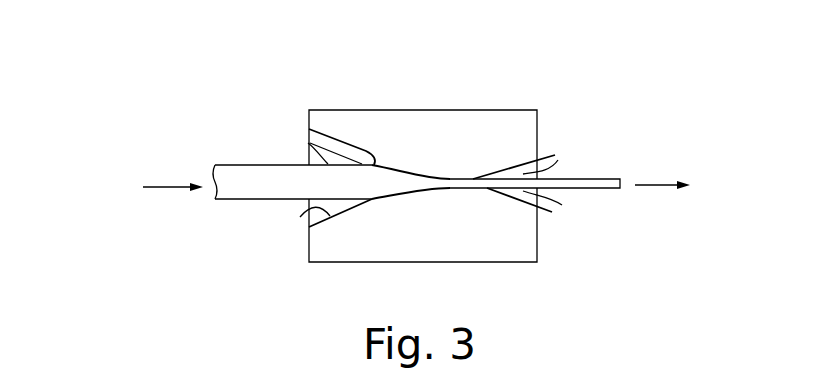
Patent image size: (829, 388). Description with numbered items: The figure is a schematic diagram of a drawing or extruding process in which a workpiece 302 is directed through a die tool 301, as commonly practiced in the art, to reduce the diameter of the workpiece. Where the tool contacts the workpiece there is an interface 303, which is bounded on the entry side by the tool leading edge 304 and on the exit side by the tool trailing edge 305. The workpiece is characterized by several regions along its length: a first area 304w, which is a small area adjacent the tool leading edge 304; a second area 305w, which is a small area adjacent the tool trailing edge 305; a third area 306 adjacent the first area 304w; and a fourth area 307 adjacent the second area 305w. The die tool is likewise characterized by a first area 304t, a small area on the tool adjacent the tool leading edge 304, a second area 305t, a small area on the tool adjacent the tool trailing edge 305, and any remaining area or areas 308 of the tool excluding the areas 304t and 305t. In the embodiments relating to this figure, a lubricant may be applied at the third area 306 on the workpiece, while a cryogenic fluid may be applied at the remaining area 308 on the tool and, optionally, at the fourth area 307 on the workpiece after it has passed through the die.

The die tool 301 is at (517, 144).
The workpiece 302 is at (283, 196).
The interface 303 is at (425, 178).
The tool leading edge 304 is at (312, 130).
The first area of the workpiece 304w is at (308, 143).
The first area of the die tool 304t is at (300, 217).
The tool trailing edge 305 is at (453, 177).
The second area of the die tool 305t is at (558, 160).
The second area of the workpiece 305w is at (562, 205).
The third area of the workpiece 306 is at (265, 165).
The fourth area of the workpiece 307 is at (580, 179).
The remaining area of the tool 308 is at (463, 110).